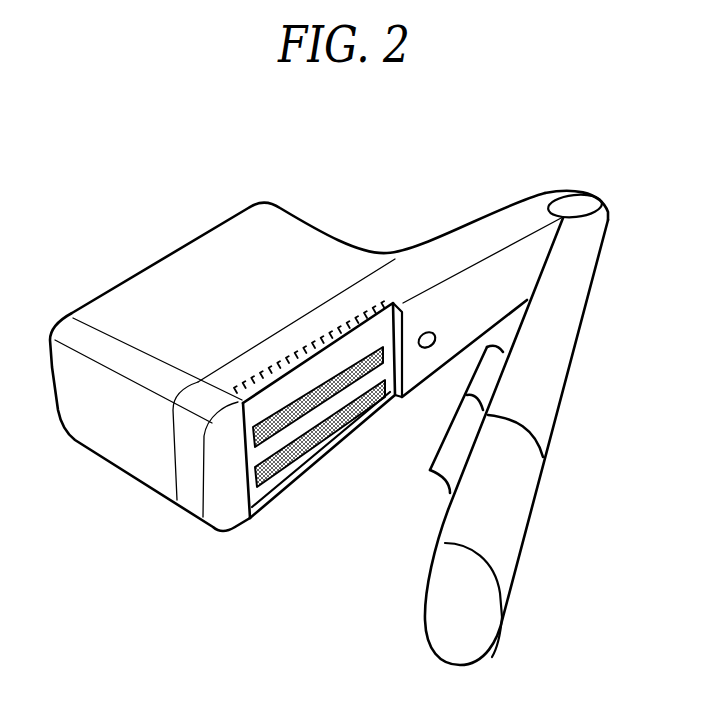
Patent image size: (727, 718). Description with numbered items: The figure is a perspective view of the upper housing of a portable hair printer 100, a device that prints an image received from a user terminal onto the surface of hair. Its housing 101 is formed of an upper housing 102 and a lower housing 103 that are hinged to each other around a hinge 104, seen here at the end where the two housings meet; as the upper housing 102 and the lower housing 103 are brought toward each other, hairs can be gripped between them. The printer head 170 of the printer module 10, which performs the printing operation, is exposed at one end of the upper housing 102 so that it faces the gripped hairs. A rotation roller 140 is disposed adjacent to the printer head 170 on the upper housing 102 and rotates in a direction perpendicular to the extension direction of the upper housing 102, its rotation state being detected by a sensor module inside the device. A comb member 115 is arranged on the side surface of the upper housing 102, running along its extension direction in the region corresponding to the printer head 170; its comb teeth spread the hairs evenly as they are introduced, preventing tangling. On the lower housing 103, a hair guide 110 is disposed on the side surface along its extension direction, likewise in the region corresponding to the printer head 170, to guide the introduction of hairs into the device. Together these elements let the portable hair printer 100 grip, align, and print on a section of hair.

The portable hair printer 100 is at (72, 163).
The housing 101 is at (162, 250).
The printer module 10 is at (303, 238).
The upper housing 102 is at (503, 232).
The lower housing 103 is at (558, 333).
The hinge 104 is at (577, 204).
The hair guide 110 is at (457, 438).
The comb member 115 is at (345, 315).
The rotation roller 140 is at (302, 380).
The printer head 170 is at (290, 417).